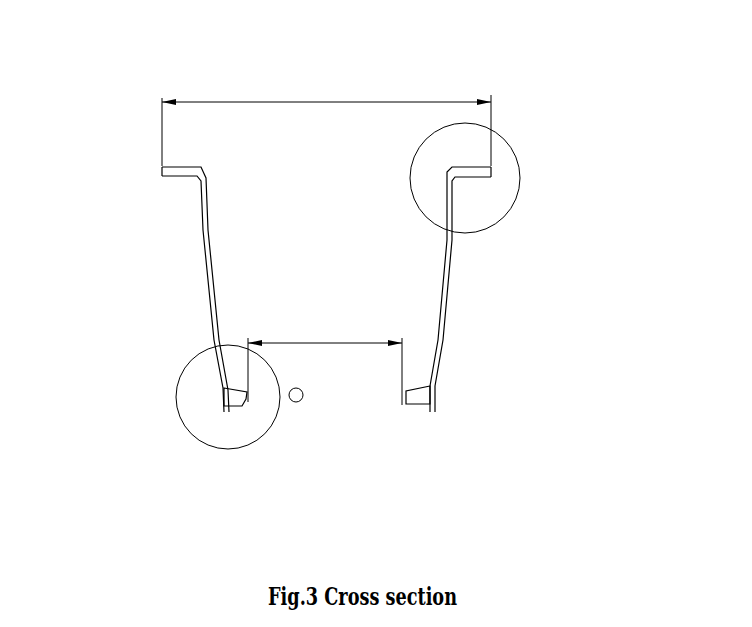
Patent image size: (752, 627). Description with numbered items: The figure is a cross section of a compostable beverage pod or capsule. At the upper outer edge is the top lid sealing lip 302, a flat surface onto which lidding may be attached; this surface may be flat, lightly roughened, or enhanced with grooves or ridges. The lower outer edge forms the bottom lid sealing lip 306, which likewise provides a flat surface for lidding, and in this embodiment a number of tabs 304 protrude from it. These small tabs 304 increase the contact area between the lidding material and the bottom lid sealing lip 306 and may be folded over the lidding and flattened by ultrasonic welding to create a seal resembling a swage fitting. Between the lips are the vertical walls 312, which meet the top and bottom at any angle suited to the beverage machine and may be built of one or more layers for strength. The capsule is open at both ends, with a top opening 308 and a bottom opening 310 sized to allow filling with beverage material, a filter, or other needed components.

The top lid sealing lip 302 is at (491, 172).
The tabs 304 is at (227, 402).
The bottom lid sealing lip 306 is at (410, 400).
The top opening 308 is at (340, 145).
The bottom opening 310 is at (327, 415).
The vertical walls 312 is at (212, 278).